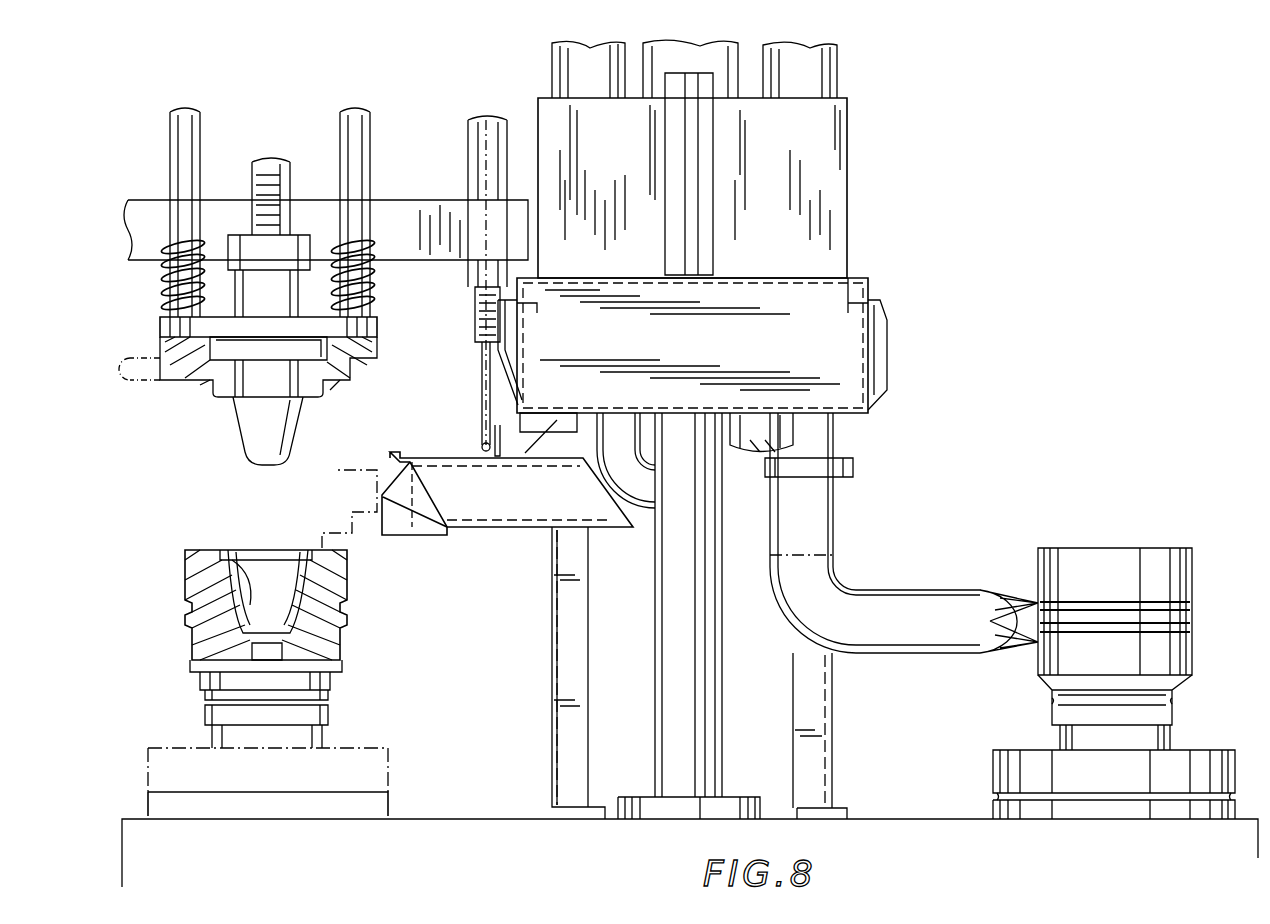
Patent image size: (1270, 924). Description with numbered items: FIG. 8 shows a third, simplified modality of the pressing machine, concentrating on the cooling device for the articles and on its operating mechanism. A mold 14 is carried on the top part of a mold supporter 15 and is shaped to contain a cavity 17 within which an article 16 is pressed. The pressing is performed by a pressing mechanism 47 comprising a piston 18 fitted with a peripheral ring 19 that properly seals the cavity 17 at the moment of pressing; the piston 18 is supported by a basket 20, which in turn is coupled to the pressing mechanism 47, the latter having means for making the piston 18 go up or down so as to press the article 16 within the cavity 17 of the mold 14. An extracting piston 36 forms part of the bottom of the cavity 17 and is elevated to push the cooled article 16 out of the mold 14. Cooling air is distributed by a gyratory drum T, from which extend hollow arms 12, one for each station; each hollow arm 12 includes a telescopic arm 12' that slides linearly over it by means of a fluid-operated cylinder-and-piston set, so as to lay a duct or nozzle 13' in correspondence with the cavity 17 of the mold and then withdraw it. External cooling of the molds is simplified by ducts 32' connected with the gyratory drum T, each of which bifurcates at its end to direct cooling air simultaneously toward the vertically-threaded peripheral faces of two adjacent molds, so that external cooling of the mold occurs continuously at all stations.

The gyratory drum T is at (850, 127).
The pressing mechanism 47 is at (287, 160).
The basket 20 is at (378, 333).
The peripheral ring 19 is at (322, 392).
The piston 18 is at (293, 450).
The mold 14 is at (348, 593).
The article 16 is at (250, 600).
The cavity 17 is at (282, 565).
The extracting piston 36 is at (262, 655).
The mold supporter 15 is at (330, 710).
The hollow arm 12 is at (626, 503).
The telescopic arm 12' is at (511, 509).
The duct or nozzle 13' is at (422, 515).
The duct 32' is at (901, 616).